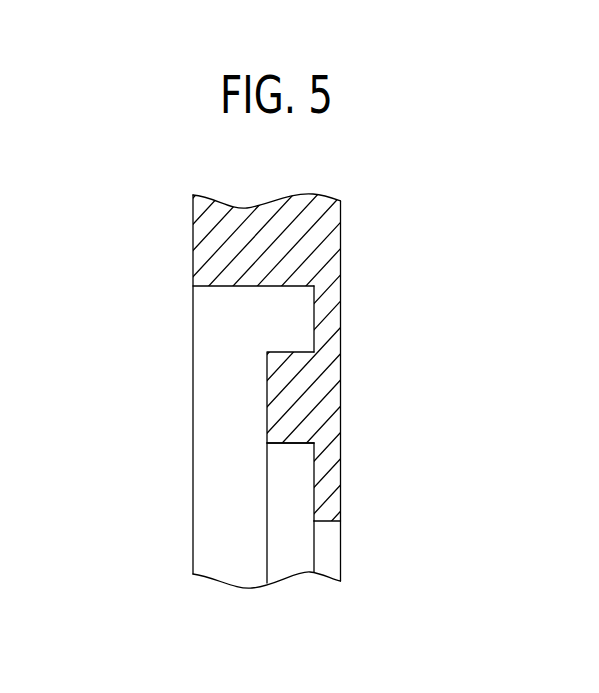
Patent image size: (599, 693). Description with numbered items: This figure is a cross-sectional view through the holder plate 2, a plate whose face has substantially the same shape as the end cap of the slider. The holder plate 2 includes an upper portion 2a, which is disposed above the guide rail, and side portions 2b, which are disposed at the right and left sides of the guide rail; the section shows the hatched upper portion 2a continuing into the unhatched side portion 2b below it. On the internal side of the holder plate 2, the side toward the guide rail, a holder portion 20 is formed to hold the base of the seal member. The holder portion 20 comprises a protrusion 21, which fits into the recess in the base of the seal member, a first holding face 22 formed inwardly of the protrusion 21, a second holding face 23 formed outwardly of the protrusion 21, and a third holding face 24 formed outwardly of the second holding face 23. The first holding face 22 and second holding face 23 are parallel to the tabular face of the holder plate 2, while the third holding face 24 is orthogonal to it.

The holder plate 2 is at (372, 372).
The upper portion 2a is at (342, 242).
The side portion 2b is at (333, 548).
The holder portion 20 is at (193, 434).
The protrusion 21 is at (277, 402).
The first holding face 22 is at (313, 479).
The second holding face 23 is at (313, 312).
The third holding face 24 is at (248, 287).